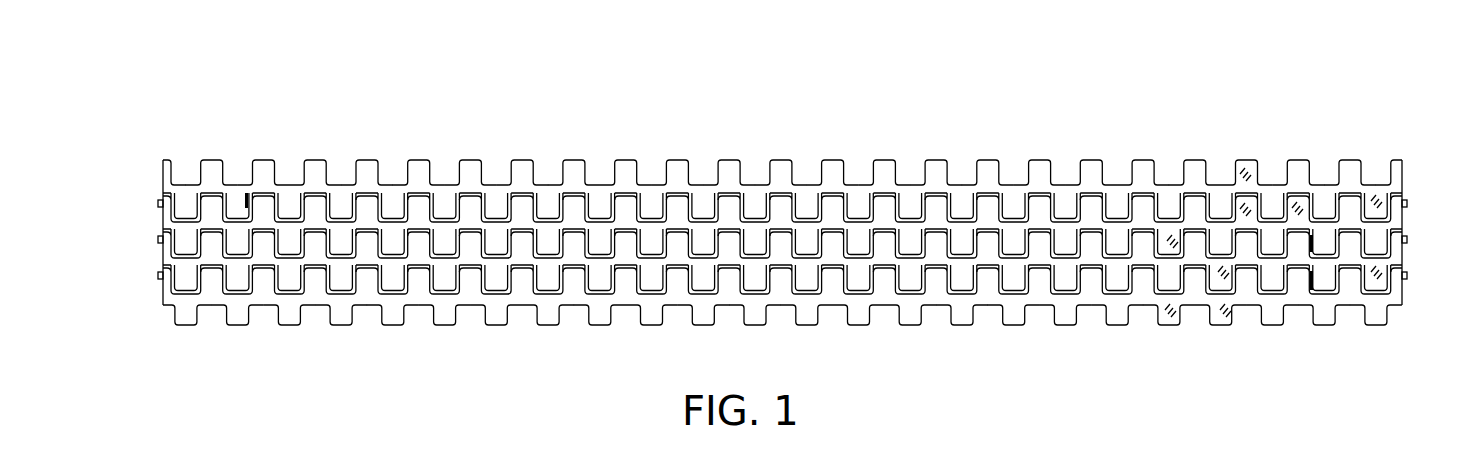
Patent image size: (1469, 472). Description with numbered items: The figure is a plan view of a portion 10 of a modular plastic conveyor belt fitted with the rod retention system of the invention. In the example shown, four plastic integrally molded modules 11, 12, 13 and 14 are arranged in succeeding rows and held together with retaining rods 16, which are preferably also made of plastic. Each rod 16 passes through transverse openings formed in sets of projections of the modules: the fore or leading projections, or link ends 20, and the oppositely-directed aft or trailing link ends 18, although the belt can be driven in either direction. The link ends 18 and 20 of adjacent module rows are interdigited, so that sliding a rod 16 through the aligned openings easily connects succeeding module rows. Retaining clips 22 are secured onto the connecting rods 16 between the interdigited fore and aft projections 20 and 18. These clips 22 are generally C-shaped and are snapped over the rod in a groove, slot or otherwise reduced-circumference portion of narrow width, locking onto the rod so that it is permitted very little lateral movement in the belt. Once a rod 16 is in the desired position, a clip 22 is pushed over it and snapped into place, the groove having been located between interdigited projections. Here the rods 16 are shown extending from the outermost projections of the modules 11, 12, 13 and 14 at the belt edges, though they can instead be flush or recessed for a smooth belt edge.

The portion of a modular plastic conveyor belt 10 is at (1224, 61).
The plastic integrally molded module 11 is at (801, 158).
The plastic integrally molded module 12 is at (1410, 219).
The plastic integrally molded module 13 is at (1409, 259).
The plastic integrally molded module 14 is at (809, 320).
The retaining rod 16 is at (1407, 202).
The aft or trailing link ends 18 is at (728, 161).
The fore or leading link ends 20 is at (1368, 325).
The retaining clip 22 is at (243, 202).